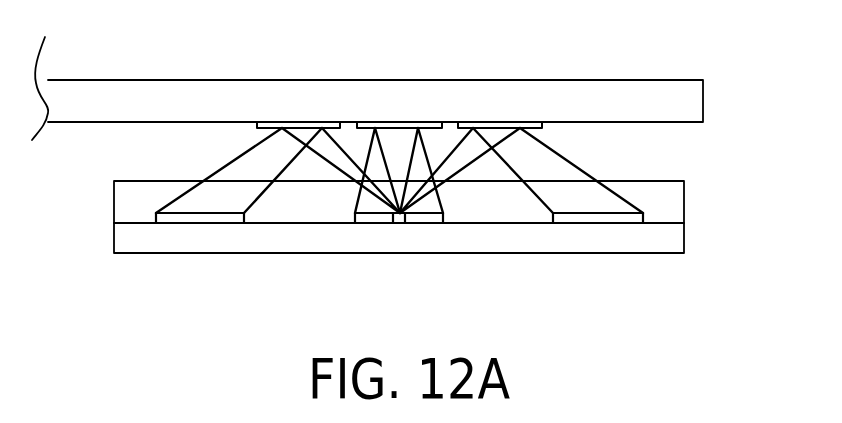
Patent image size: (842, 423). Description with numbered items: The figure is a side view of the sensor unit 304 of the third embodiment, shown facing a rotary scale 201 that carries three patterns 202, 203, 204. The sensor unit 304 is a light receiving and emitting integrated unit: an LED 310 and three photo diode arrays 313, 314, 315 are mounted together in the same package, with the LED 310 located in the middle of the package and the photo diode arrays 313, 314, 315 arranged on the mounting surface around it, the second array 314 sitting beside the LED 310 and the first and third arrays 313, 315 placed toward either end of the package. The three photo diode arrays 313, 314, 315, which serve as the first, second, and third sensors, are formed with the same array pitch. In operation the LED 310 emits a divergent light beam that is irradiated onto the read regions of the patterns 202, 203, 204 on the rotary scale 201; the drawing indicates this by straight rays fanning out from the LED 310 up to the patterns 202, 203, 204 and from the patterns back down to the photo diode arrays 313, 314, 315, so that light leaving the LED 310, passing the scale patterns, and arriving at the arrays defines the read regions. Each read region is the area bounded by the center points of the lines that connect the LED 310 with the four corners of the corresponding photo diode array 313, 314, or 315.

The rotary scale 201 is at (602, 80).
The pattern 202 is at (498, 122).
The pattern 203 is at (410, 122).
The pattern 204 is at (322, 122).
The sensor unit 304 is at (685, 203).
The LED 310 is at (401, 214).
The photo diode array 313 is at (577, 214).
The photo diode array 314 is at (367, 214).
The photo diode array 315 is at (227, 214).